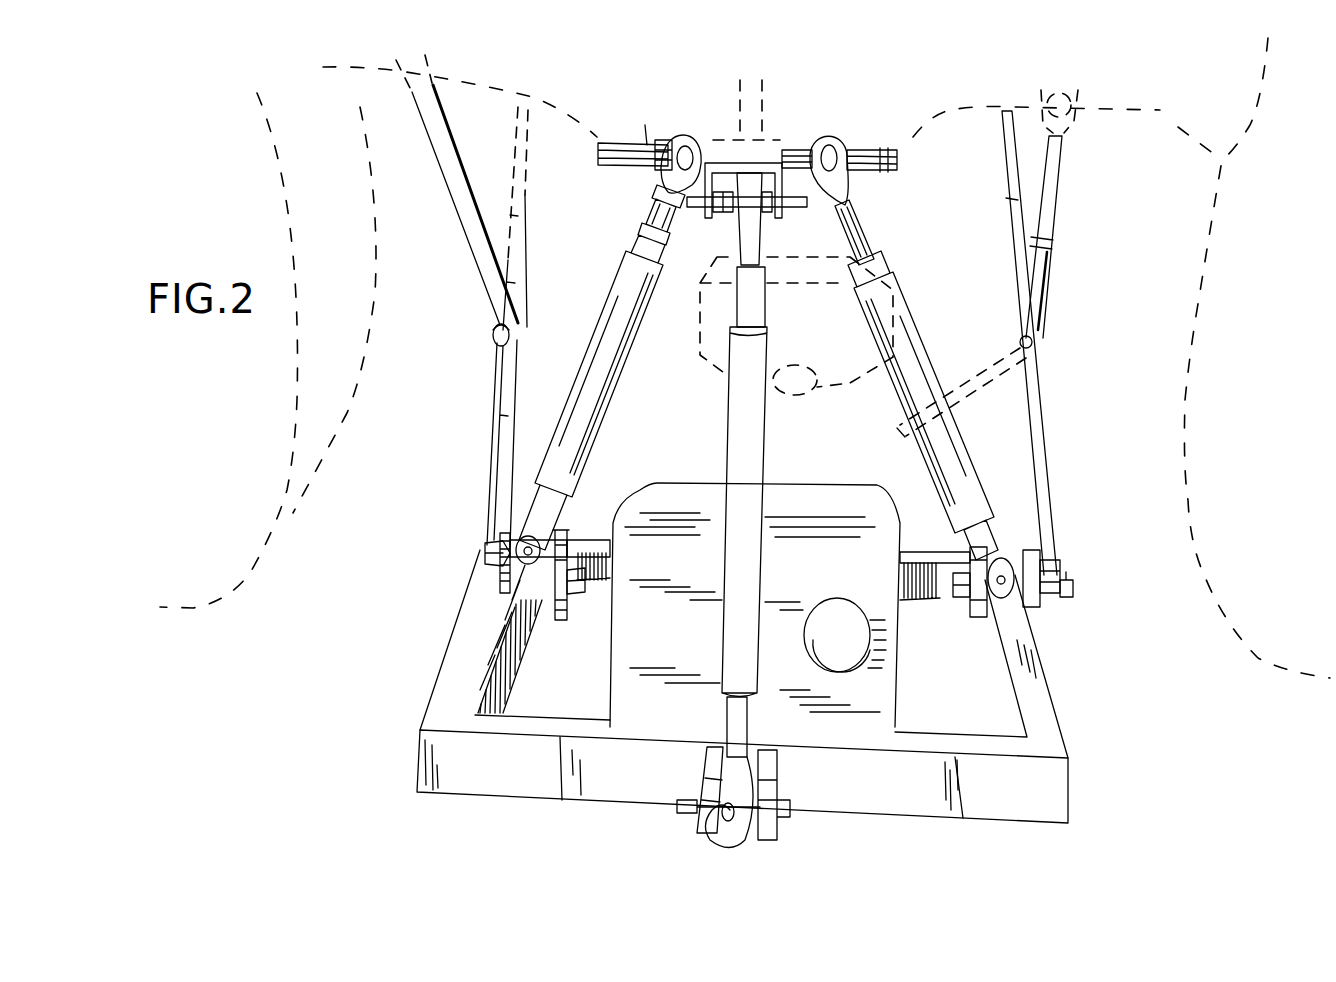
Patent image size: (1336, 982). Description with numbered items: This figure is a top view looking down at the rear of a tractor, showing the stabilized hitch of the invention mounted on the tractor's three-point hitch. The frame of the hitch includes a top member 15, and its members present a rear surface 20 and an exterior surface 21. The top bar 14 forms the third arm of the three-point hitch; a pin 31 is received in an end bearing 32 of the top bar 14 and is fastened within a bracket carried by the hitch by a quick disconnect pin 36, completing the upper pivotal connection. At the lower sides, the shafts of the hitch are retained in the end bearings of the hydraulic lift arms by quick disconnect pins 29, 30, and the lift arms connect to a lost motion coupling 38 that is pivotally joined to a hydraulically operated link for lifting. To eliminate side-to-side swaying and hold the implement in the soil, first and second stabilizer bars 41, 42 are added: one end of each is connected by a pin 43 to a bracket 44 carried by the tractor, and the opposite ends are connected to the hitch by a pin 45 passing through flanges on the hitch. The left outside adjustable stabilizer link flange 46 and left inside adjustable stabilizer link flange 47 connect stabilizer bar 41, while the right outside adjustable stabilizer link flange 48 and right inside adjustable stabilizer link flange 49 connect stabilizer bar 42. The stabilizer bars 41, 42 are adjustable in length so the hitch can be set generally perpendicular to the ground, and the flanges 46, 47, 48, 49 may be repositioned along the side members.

The top bar 14 is at (747, 447).
The top member 15 is at (900, 800).
The rear surface 20 is at (1033, 700).
The exterior surface 21 is at (1018, 800).
The quick disconnect pin 29 is at (477, 552).
The quick disconnect pin 30 is at (1067, 600).
The pin 31 is at (757, 830).
The end bearing 32 is at (693, 810).
The quick disconnect pin 36 is at (773, 822).
The lost motion coupling 38 is at (497, 337).
The first stabilizer bar 41 is at (607, 342).
The second stabilizer bar 42 is at (920, 363).
The pin 43 is at (630, 150).
The bracket 44 is at (753, 142).
The pin 45 is at (580, 573).
The left outside adjustable stabilizer link flange 46 is at (480, 547).
The left inside adjustable stabilizer link flange 47 is at (580, 613).
The right outside adjustable stabilizer link flange 48 is at (1047, 573).
The right inside adjustable stabilizer link flange 49 is at (977, 617).